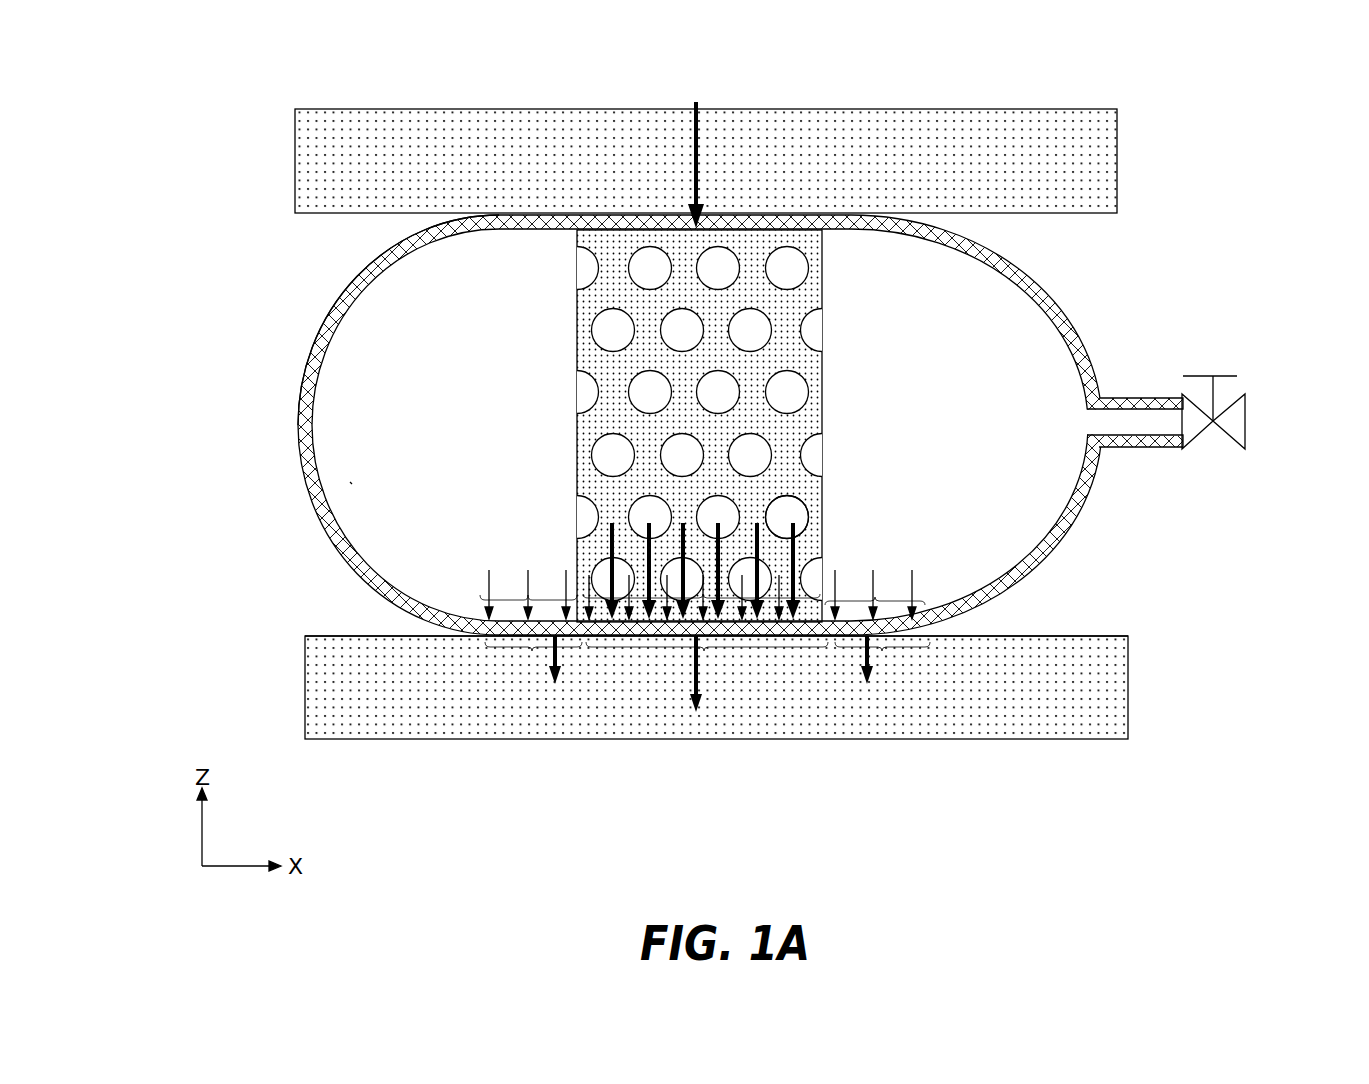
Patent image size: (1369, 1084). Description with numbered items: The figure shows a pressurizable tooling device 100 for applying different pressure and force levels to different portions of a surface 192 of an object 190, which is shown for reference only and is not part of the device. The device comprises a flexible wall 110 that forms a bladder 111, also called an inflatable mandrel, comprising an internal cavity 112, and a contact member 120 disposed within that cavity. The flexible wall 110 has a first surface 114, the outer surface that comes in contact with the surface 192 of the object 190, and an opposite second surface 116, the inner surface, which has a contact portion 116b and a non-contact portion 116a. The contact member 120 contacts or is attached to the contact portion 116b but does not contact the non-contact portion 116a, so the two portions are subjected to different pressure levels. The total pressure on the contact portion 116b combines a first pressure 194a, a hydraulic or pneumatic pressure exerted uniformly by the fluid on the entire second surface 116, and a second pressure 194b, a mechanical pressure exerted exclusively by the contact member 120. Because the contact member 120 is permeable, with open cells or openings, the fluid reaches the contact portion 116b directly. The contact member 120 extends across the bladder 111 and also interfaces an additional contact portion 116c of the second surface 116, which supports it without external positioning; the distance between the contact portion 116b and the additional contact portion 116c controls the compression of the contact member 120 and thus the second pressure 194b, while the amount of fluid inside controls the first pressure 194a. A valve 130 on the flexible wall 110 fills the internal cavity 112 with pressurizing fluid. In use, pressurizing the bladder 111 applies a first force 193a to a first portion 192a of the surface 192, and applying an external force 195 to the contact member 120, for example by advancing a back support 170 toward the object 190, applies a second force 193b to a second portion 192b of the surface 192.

The pressurizable tooling device 100 is at (243, 216).
The flexible wall 110 is at (578, 425).
The bladder 111 is at (336, 279).
The internal cavity 112 is at (355, 446).
The first surface 114 is at (303, 350).
The second surface 116 is at (350, 482).
The non-contact portion 116a is at (535, 597).
The contact portion 116b is at (593, 458).
The additional contact portion 116c is at (592, 287).
The contact member 120 is at (859, 426).
The valve 130 is at (1235, 422).
The back support 170 is at (1035, 168).
The object 190 is at (315, 692).
The surface 192 is at (336, 634).
The first portion 192a is at (532, 652).
The second portion 192b is at (733, 652).
The first force 193a is at (552, 686).
The second force 193b is at (693, 677).
The first pressure 194a is at (913, 582).
The second pressure 194b is at (793, 648).
The external force 195 is at (700, 158).